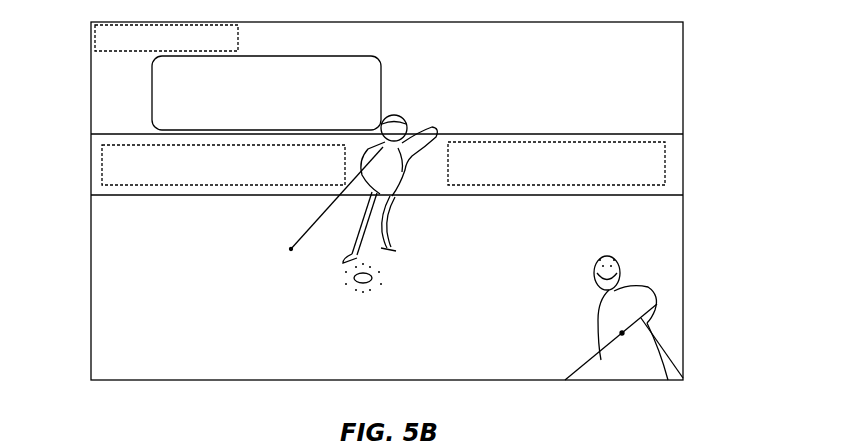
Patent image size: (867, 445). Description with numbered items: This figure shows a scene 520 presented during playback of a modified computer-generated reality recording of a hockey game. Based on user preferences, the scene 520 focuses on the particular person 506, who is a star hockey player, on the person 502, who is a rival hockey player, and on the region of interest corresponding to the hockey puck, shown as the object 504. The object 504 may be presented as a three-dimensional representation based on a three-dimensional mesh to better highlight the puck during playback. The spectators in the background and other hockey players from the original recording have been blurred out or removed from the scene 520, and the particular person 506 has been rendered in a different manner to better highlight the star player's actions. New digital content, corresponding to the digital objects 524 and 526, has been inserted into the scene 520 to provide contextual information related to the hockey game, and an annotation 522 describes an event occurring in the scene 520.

The scene 520 is at (718, 38).
The annotation 522 is at (381, 93).
The digital object 524 is at (101, 162).
The digital object 526 is at (665, 168).
The person 502 is at (394, 223).
The object 504 is at (388, 296).
The particular person 506 is at (594, 268).